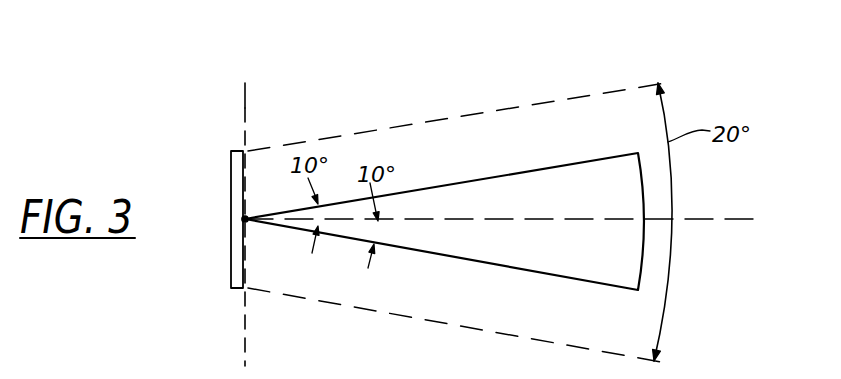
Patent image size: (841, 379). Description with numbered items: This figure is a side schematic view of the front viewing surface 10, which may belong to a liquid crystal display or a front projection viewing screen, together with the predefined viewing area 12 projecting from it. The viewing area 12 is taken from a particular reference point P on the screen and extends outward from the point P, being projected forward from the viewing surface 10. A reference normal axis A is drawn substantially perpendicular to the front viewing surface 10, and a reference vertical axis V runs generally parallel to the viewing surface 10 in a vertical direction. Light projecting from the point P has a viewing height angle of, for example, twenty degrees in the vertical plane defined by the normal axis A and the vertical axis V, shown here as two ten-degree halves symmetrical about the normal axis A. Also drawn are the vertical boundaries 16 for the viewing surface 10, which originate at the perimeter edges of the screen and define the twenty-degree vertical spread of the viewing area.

The front viewing surface 10 is at (231, 195).
The viewing area 12 is at (529, 195).
The vertical boundaries 16 is at (403, 126).
The reference point P is at (245, 219).
The reference vertical axis V is at (245, 92).
The reference normal axis A is at (508, 222).